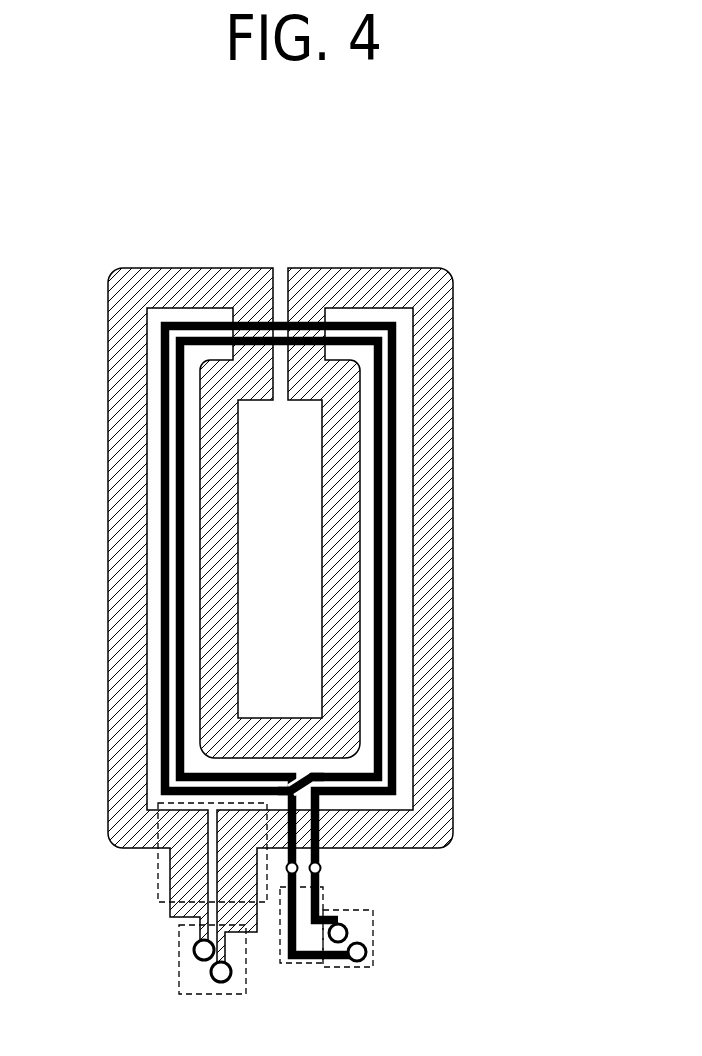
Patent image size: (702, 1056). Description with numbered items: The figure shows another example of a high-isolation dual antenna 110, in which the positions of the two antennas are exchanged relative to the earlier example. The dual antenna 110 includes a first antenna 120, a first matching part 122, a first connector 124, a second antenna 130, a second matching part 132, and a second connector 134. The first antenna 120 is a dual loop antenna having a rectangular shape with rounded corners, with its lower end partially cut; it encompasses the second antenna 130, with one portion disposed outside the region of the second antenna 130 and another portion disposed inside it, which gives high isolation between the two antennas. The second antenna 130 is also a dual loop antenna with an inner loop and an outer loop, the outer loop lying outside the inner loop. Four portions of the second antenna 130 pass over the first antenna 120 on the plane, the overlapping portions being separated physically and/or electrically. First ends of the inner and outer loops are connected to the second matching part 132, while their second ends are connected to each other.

The dual antenna 110 is at (305, 176).
The first antenna 120 is at (452, 480).
The first matching part 122 is at (158, 883).
The first connector 124 is at (178, 958).
The second antenna 130 is at (397, 397).
The second matching part 132 is at (323, 883).
The second connector 134 is at (373, 928).